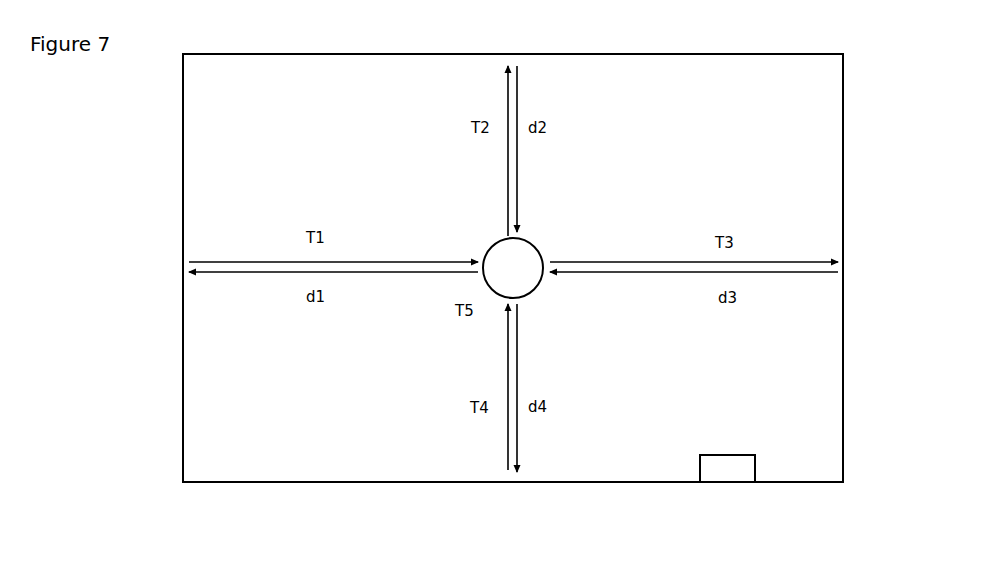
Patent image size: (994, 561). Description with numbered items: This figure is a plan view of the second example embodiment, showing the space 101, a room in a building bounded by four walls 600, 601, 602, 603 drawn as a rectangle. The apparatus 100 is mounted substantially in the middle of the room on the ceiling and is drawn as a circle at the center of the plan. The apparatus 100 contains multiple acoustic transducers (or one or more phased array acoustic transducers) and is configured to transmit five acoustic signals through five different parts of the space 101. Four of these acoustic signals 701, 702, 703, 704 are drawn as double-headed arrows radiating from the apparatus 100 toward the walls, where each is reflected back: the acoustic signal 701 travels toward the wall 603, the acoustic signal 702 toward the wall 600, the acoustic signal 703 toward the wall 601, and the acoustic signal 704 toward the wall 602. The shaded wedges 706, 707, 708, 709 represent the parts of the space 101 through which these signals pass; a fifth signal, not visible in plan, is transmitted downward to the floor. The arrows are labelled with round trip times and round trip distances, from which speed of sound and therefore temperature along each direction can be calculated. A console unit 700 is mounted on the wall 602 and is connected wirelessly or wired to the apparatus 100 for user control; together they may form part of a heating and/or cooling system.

The space 101 is at (306, 53).
The wall 600 is at (738, 53).
The wall 601 is at (845, 93).
The wall 602 is at (348, 484).
The wall 603 is at (183, 420).
The apparatus 100 is at (520, 278).
The console unit 700 is at (729, 472).
The acoustic signal 701 is at (236, 275).
The acoustic signal 702 is at (506, 140).
The acoustic signal 703 is at (638, 261).
The acoustic signal 704 is at (518, 372).
The part of the space 706 is at (224, 168).
The part of the space 707 is at (434, 74).
The part of the space 708 is at (742, 183).
The part of the space 709 is at (592, 441).